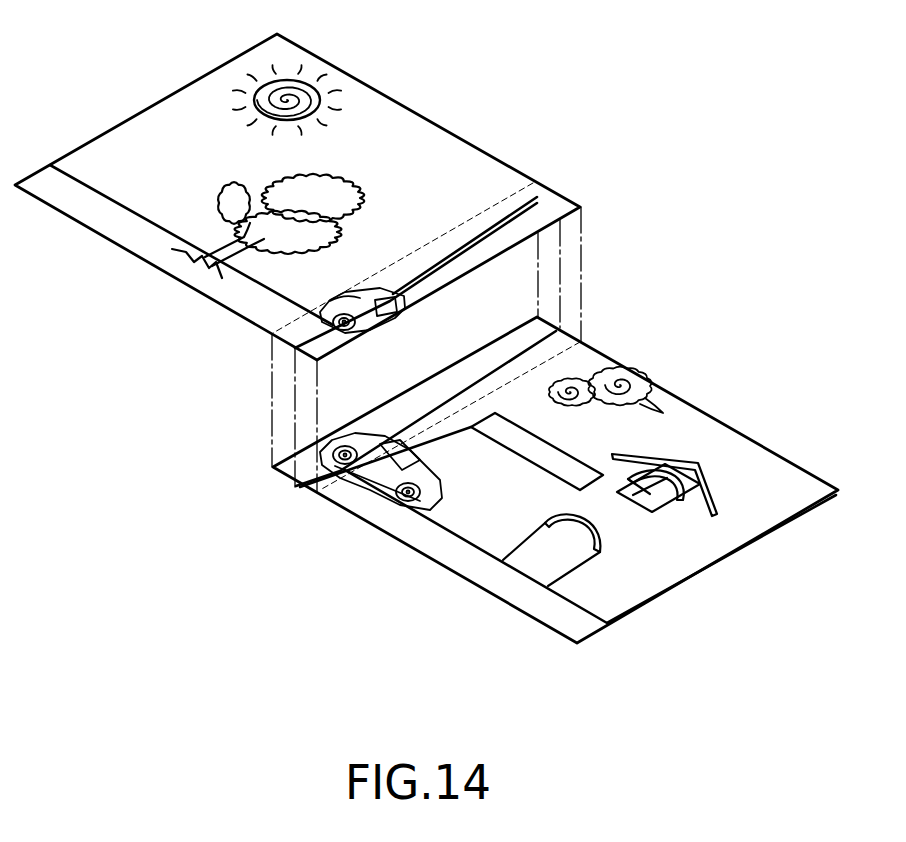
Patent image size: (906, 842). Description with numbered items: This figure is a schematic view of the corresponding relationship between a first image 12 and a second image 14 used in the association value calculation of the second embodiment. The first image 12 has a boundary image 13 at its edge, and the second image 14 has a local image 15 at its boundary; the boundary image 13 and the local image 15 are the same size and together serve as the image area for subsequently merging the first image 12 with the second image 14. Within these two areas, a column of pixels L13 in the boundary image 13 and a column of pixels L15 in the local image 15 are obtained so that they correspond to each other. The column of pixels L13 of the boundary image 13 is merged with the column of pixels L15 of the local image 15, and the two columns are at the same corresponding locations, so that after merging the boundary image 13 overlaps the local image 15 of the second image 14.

The first image 12 is at (181, 76).
The boundary image 13 is at (537, 197).
The column of pixels L13 is at (558, 190).
The second image 14 is at (731, 418).
The local image 15 is at (413, 396).
The column of pixels L15 is at (292, 486).